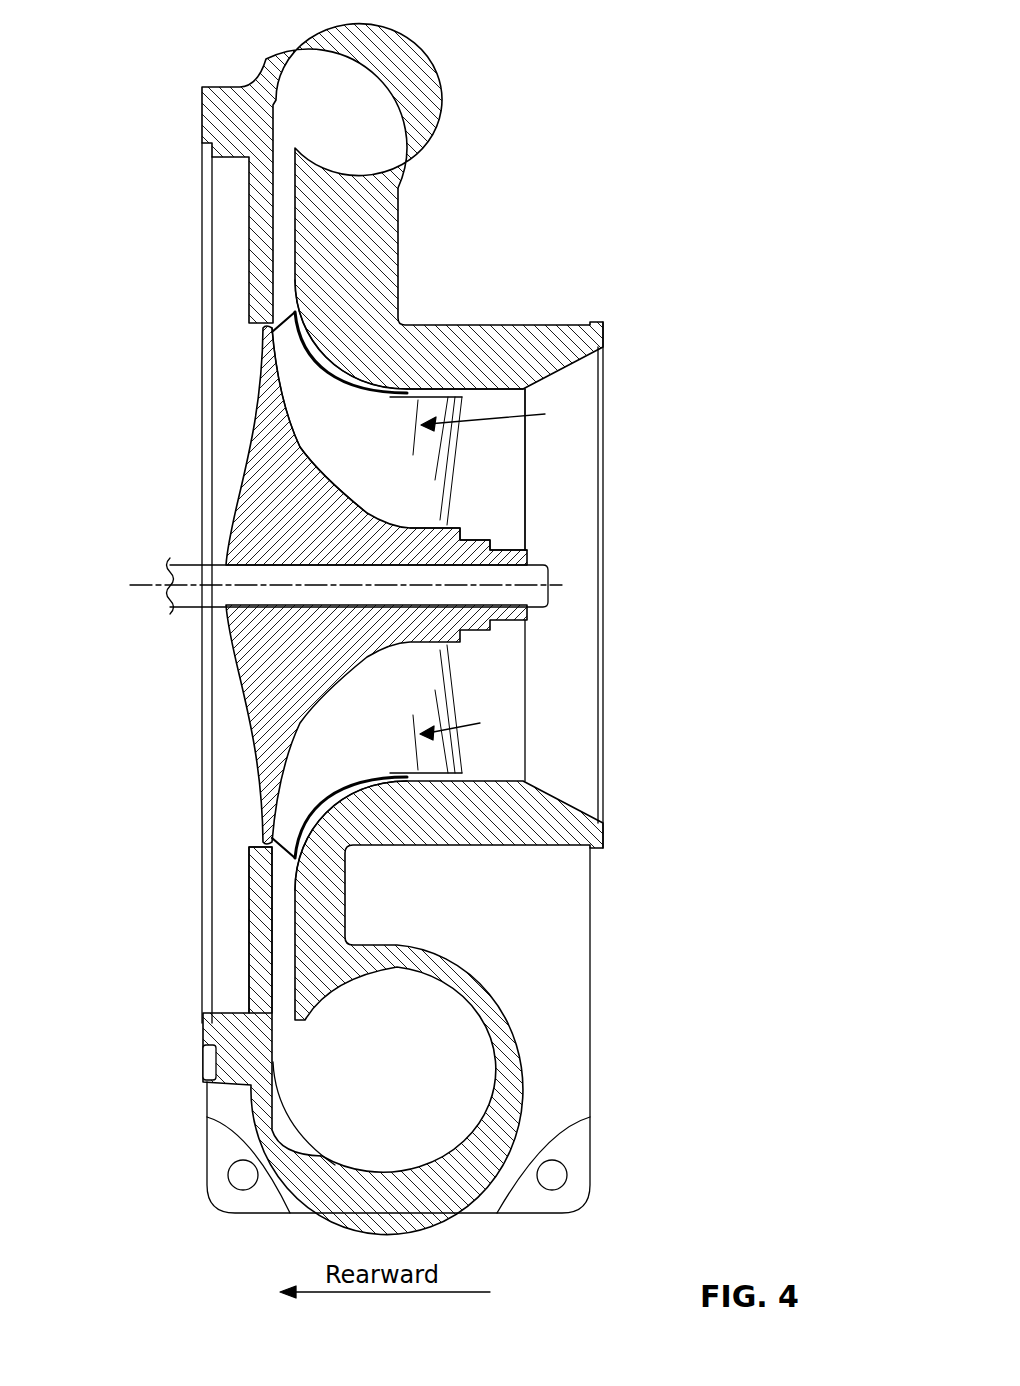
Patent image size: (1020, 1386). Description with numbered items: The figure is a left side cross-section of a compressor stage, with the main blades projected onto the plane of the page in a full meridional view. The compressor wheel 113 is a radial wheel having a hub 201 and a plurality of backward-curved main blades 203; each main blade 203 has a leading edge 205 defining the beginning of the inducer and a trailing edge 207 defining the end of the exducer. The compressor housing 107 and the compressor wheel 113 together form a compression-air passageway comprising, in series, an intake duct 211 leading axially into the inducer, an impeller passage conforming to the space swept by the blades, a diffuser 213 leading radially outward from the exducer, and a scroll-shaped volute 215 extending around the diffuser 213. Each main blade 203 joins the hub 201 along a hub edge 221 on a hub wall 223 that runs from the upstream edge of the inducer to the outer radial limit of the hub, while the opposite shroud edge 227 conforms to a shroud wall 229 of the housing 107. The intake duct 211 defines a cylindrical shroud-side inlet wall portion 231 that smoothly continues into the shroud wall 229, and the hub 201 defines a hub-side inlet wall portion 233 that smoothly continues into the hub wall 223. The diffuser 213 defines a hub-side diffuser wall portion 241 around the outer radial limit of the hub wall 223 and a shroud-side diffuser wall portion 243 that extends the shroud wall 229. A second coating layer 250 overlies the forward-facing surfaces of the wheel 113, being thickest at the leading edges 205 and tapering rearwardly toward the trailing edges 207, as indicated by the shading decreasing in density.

The compressor housing 107 is at (528, 325).
The hub 201 is at (330, 510).
The main blades 203 is at (427, 499).
The leading edge 205 is at (450, 682).
The trailing edge 207 is at (290, 303).
The intake duct 211 is at (478, 507).
The diffuser 213 is at (280, 925).
The volute 215 is at (323, 1075).
The hub edge 221 is at (322, 462).
The hub wall 223 is at (322, 506).
The shroud edge 227 is at (400, 388).
The shroud wall 229 is at (305, 336).
The shroud-side inlet wall portion 231 is at (502, 390).
The hub-side inlet wall portion 233 is at (455, 520).
The hub-side diffuser wall portion 241 is at (280, 972).
The shroud-side diffuser wall portion 243 is at (295, 885).
The second coating layer 250 is at (502, 461).
The compressor wheel 113 is at (330, 672).